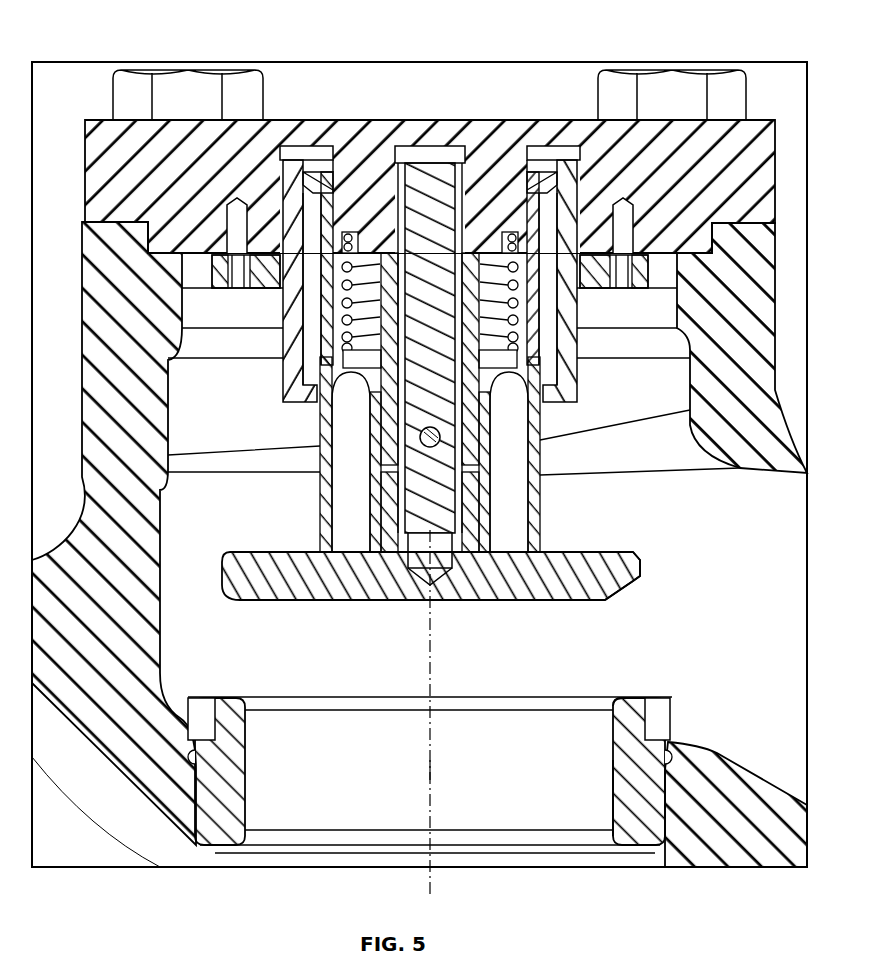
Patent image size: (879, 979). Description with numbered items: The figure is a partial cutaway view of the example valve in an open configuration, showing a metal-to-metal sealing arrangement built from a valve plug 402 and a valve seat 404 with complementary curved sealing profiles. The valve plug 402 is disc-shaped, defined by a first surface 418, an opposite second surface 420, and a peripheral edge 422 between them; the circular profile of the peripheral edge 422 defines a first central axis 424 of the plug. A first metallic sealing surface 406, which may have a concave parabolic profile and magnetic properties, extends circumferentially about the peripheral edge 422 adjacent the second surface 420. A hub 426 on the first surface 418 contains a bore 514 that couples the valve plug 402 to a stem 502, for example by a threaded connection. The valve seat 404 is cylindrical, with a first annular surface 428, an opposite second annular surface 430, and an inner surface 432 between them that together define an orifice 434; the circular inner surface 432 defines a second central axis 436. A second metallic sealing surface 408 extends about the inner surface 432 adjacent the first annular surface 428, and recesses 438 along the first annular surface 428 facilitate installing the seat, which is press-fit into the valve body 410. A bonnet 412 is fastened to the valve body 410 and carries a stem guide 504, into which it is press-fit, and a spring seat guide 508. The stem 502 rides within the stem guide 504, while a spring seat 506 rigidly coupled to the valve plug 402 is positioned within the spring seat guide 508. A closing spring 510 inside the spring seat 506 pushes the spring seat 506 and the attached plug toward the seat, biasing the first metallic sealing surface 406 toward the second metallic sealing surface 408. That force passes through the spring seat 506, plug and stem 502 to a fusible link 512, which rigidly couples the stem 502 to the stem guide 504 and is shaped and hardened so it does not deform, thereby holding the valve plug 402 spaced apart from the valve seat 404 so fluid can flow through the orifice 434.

The valve plug 402 is at (243, 577).
The valve seat 404 is at (222, 825).
The first metallic sealing surface 406 is at (623, 594).
The second metallic sealing surface 408 is at (615, 694).
The valve body 410 is at (740, 417).
The bonnet 412 is at (764, 142).
The first surface 418 is at (616, 546).
The second surface 420 is at (601, 609).
The peripheral edge 422 is at (643, 572).
The first central axis 424 is at (427, 625).
The hub 426 is at (467, 497).
The first annular surface 428 is at (637, 694).
The second annular surface 430 is at (647, 850).
The inner surface 432 is at (607, 823).
The orifice 434 is at (325, 745).
The second central axis 436 is at (430, 768).
The recesses 438 is at (658, 722).
The stem 502 is at (432, 398).
The stem guide 504 is at (467, 432).
The spring seat 506 is at (323, 415).
The spring seat guide 508 is at (288, 380).
The closing spring 510 is at (347, 285).
The fusible link 512 is at (419, 437).
The bore 514 is at (418, 552).